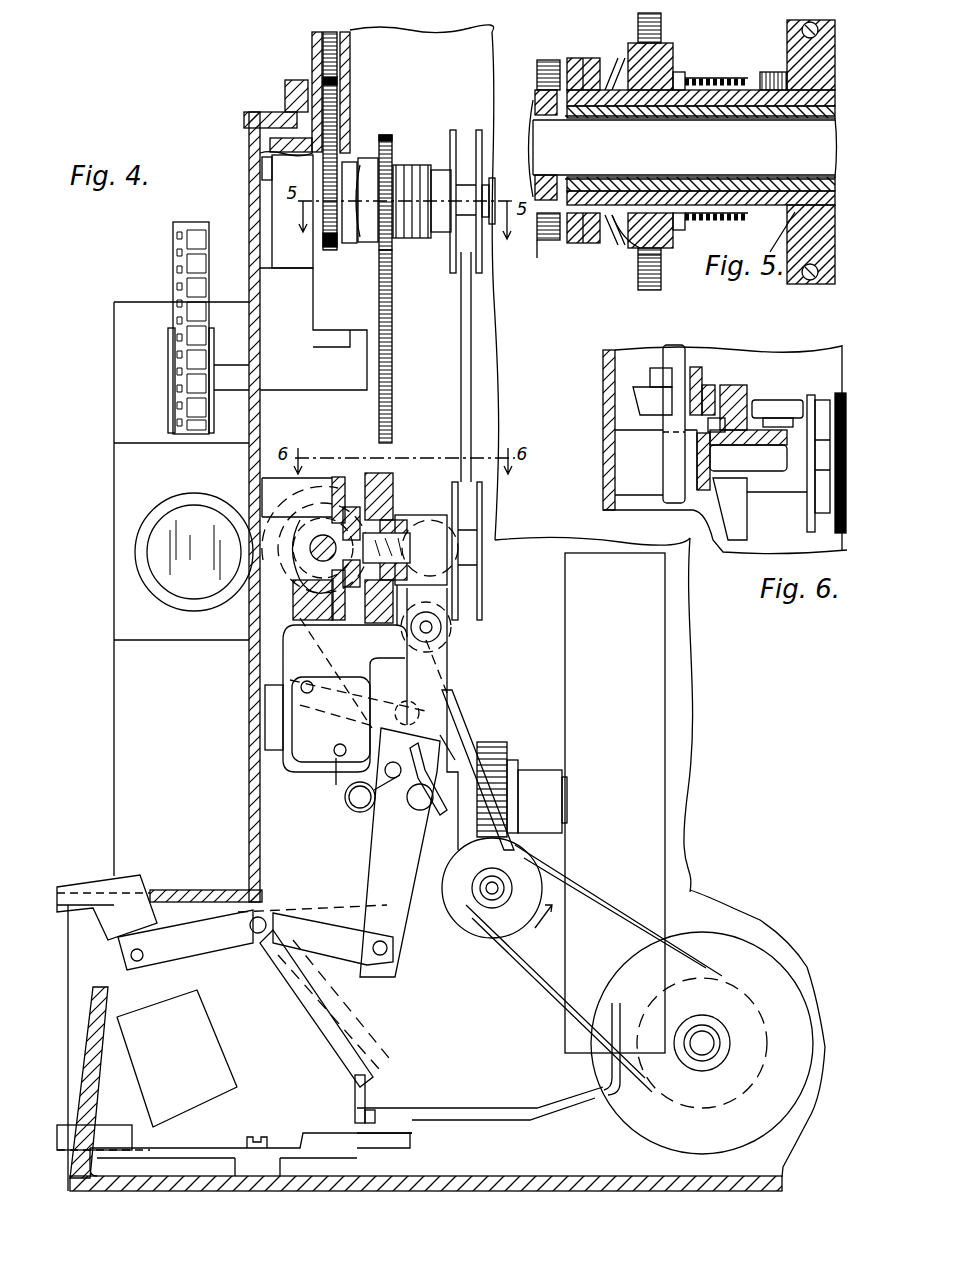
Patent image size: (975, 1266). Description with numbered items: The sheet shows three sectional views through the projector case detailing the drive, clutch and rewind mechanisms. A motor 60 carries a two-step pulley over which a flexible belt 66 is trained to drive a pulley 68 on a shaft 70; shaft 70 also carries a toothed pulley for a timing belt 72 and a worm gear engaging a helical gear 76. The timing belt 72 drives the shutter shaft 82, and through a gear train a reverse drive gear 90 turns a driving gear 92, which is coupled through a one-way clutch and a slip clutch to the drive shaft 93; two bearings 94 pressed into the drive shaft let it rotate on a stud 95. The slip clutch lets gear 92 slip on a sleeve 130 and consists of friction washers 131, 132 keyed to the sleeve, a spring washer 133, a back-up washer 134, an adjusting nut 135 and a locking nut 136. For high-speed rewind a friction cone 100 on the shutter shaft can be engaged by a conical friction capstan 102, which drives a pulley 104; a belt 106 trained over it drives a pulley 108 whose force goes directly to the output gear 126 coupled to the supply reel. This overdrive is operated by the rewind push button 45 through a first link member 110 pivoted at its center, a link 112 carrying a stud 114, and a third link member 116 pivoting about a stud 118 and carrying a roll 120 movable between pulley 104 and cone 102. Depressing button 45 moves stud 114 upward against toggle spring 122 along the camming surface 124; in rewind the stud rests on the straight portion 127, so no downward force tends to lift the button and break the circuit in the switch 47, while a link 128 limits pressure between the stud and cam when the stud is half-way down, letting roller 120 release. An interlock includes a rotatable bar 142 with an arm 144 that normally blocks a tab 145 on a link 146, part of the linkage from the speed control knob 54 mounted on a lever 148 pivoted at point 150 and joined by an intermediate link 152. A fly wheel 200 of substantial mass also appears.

In FIG. 4, the rewind push button 45 is at (118, 878).
In FIG. 4, the switch 47 is at (220, 1090).
In FIG. 4, the speed control knob 54 is at (88, 1113).
In FIG. 4, the motor 60 is at (732, 928).
In FIG. 4, the flexible belt 66 is at (546, 1010).
In FIG. 4, the pulley 68 is at (548, 884).
In FIG. 4, the shaft 70 is at (490, 900).
In FIG. 4, the timing belt 72 is at (445, 908).
In FIG. 4, the helical gear 76 is at (508, 762).
In FIG. 4, the shutter shaft 82 is at (316, 556).
In FIG. 6, the shutter shaft 82 is at (672, 356).
In FIG. 4, the reverse drive gear 90 is at (394, 332).
In FIG. 4, the driving gear 92 is at (385, 135).
In FIG. 5, the driving gear 92 is at (640, 274).
In FIG. 5, the drive shaft 93 is at (608, 250).
In FIG. 5, the bearings 94 is at (548, 225).
In FIG. 4, the stud 95 is at (494, 186).
In FIG. 5, the stud 95 is at (678, 158).
In FIG. 4, the friction cone 100 is at (327, 476).
In FIG. 6, the friction cone 100 is at (700, 372).
In FIG. 4, the conical friction capstan 102 is at (386, 478).
In FIG. 6, the conical friction capstan 102 is at (732, 398).
In FIG. 4, the pulley 104 is at (487, 592).
In FIG. 6, the pulley 104 is at (833, 400).
In FIG. 4, the belt 106 is at (473, 388).
In FIG. 5, the belt 106 is at (792, 30).
In FIG. 6, the belt 106 is at (822, 490).
In FIG. 4, the pulley 108 is at (455, 130).
In FIG. 5, the pulley 108 is at (792, 62).
In FIG. 4, the first link member 110 is at (225, 942).
In FIG. 4, the link 112 is at (372, 892).
In FIG. 4, the stud 114 is at (416, 808).
In FIG. 4, the third link member 116 is at (448, 652).
In FIG. 6, the third link member 116 is at (784, 458).
In FIG. 4, the stud 118 is at (443, 630).
In FIG. 4, the roll 120 is at (431, 516).
In FIG. 6, the roll 120 is at (778, 400).
In FIG. 4, the toggle spring 122 is at (346, 805).
In FIG. 4, the camming surface 124 is at (440, 778).
In FIG. 4, the output gear 126 is at (329, 255).
In FIG. 5, the output gear 126 is at (548, 60).
In FIG. 4, the straight portion 127 is at (440, 765).
In FIG. 4, the link 128 is at (376, 674).
In FIG. 4, the sleeve 130 is at (408, 165).
In FIG. 5, the sleeve 130 is at (700, 80).
In FIG. 5, the friction washer 131 is at (680, 70).
In FIG. 5, the friction washer 132 is at (655, 48).
In FIG. 5, the spring washer 133 is at (612, 50).
In FIG. 5, the back-up washer 134 is at (610, 72).
In FIG. 5, the adjusting nut 135 is at (588, 60).
In FIG. 5, the locking nut 136 is at (570, 58).
In FIG. 4, the rotatable bar 142 is at (262, 968).
In FIG. 4, the arm 144 is at (360, 1033).
In FIG. 4, the tab 145 is at (372, 1095).
In FIG. 4, the link 146 is at (455, 1108).
In FIG. 4, the lever 148 is at (208, 1150).
In FIG. 4, the pivot point 150 is at (265, 1138).
In FIG. 4, the intermediate link 152 is at (410, 1138).
In FIG. 4, the fly wheel 200 is at (650, 782).